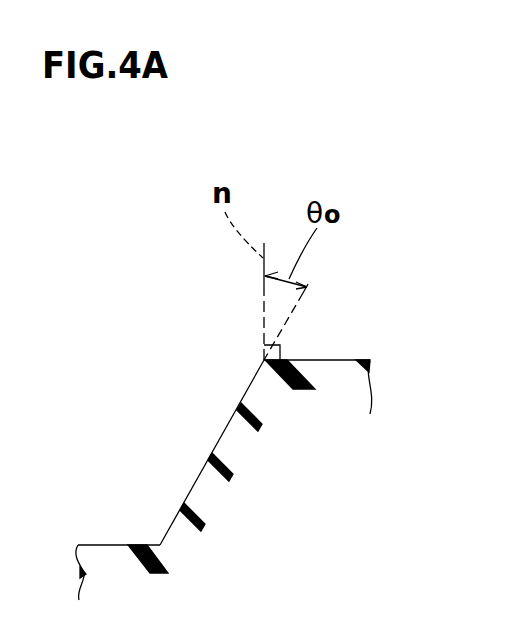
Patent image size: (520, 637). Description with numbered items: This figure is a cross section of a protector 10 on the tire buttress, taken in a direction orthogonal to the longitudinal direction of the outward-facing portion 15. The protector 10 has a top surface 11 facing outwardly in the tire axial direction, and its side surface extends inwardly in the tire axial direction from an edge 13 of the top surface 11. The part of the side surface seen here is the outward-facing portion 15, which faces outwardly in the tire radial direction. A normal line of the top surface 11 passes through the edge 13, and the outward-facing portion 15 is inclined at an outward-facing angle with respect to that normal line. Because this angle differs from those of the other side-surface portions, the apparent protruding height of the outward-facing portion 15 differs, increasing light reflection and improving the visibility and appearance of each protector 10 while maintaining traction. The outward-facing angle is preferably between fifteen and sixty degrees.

The protector 10 is at (287, 445).
The top surface 11 is at (320, 360).
The edge 13 is at (264, 360).
The outward-facing portion 15 is at (217, 441).